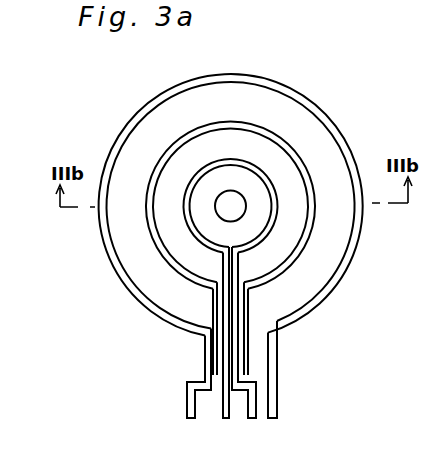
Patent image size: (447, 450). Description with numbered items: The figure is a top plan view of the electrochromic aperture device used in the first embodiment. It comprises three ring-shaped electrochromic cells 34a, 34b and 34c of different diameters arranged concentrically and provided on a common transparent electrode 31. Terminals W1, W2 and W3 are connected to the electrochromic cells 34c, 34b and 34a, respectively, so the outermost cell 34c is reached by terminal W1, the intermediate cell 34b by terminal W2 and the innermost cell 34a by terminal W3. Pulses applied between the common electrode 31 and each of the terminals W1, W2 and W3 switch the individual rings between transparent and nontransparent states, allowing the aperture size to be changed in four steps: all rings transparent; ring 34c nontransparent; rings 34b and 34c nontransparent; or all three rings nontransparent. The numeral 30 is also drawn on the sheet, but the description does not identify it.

The ring-shaped electrochromic cell 34a is at (252, 225).
The ring-shaped electrochromic cell 34b is at (290, 213).
The ring-shaped electrochromic cell 34c is at (298, 117).
The common transparent electrode 31 is at (278, 385).
The terminal W1 is at (180, 439).
The terminal W2 is at (220, 439).
The terminal W3 is at (258, 439).
The element 30 is at (418, 445).